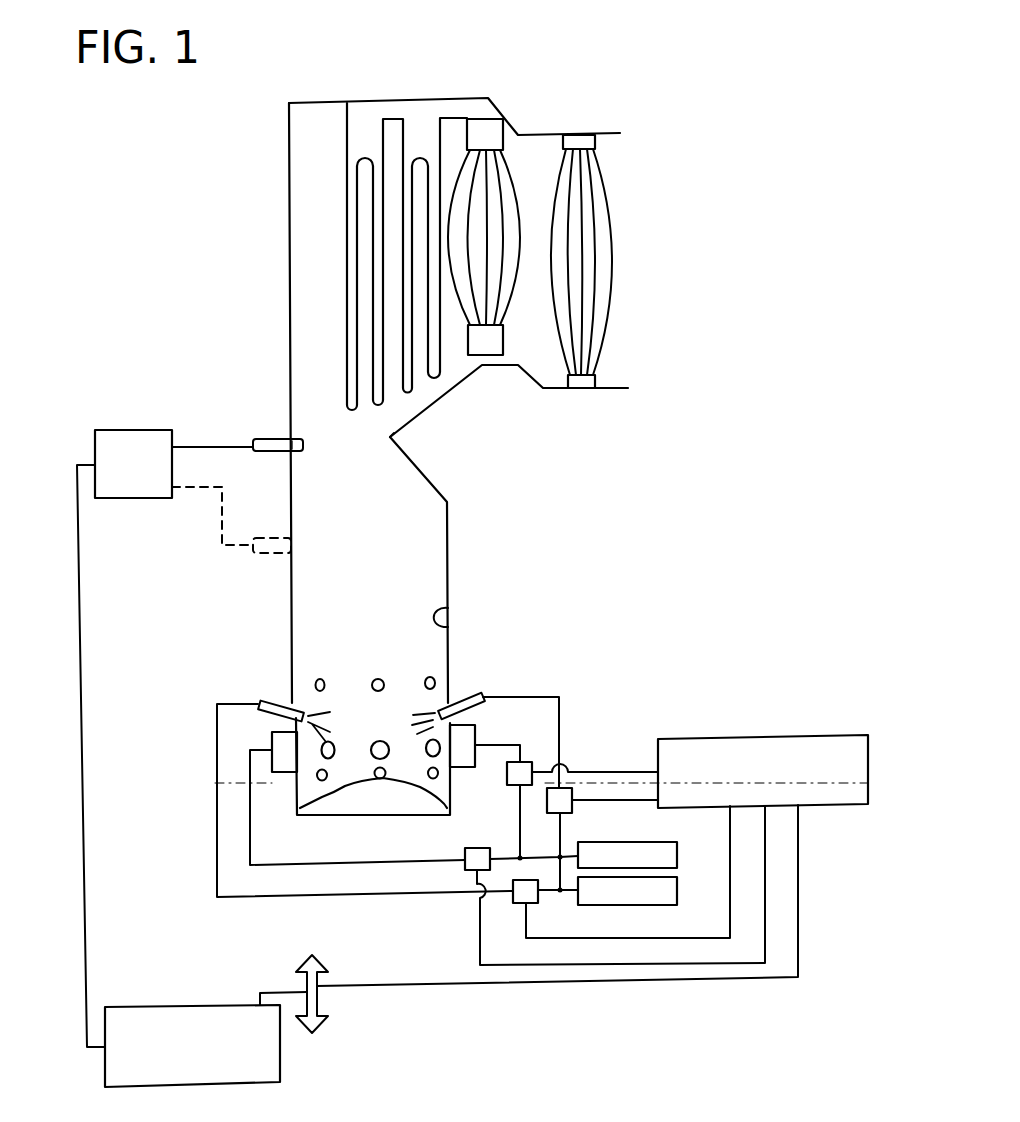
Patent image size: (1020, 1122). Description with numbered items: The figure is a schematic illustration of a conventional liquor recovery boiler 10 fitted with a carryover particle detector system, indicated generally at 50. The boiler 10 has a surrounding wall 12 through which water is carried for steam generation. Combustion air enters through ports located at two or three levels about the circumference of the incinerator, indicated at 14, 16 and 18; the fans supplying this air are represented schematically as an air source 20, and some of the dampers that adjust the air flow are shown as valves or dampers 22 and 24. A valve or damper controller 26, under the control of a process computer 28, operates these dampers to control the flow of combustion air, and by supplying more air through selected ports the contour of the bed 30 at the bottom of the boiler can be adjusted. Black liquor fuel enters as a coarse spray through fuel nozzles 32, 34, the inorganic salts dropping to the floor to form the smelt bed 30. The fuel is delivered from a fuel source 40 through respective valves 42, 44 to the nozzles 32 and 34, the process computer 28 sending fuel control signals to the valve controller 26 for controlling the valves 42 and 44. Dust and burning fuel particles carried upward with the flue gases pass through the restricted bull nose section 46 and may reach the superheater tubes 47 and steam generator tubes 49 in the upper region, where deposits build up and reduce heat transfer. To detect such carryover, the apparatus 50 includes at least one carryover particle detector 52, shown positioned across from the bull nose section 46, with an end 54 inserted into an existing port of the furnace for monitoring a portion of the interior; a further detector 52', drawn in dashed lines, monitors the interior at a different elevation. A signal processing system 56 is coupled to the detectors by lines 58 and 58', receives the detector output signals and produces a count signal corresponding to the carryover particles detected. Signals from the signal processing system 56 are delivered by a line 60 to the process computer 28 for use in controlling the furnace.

The boiler 10 is at (466, 587).
The surrounding wall 12 is at (448, 627).
The air port 14 is at (453, 787).
The air port 16 is at (447, 748).
The air port 18 is at (433, 680).
The air source 20 is at (660, 840).
The air damper 22 is at (463, 843).
The air damper 24 is at (507, 783).
The valve controller 26 is at (740, 735).
The process computer 28 is at (280, 1050).
The smelt bed 30 is at (358, 797).
The fuel nozzle 32 is at (467, 693).
The fuel nozzle 34 is at (272, 704).
The fuel source 40 is at (677, 883).
The fuel valve 42 is at (565, 815).
The fuel valve 44 is at (530, 903).
The bull nose section 46 is at (390, 437).
The superheater tubes 47 is at (340, 194).
The steam generator tubes 49 is at (510, 188).
The carryover particle detecting apparatus 50 is at (115, 419).
The carryover particle detector 52 is at (272, 401).
The carryover particle detector 52' is at (241, 575).
The detector end 54 is at (303, 447).
The signal processing system 56 is at (147, 430).
The line 58 is at (212, 413).
The line 58' is at (209, 526).
The line 60 is at (80, 645).